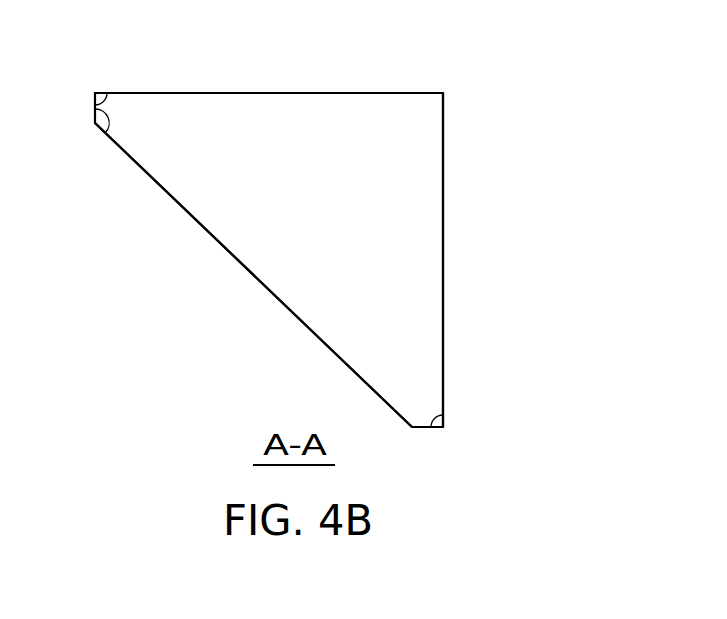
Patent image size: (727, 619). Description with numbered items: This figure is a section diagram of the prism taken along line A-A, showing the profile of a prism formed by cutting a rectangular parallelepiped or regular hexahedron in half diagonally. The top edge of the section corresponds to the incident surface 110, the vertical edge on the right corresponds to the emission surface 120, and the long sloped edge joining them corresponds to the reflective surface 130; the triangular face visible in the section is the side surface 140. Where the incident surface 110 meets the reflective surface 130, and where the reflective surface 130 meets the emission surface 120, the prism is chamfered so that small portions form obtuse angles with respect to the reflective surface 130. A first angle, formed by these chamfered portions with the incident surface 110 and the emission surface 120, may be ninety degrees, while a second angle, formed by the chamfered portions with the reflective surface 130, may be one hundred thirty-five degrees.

The incident surface 110 is at (247, 93).
The emission surface 120 is at (443, 247).
The reflective surface 130 is at (262, 284).
The side surface 140 is at (217, 167).